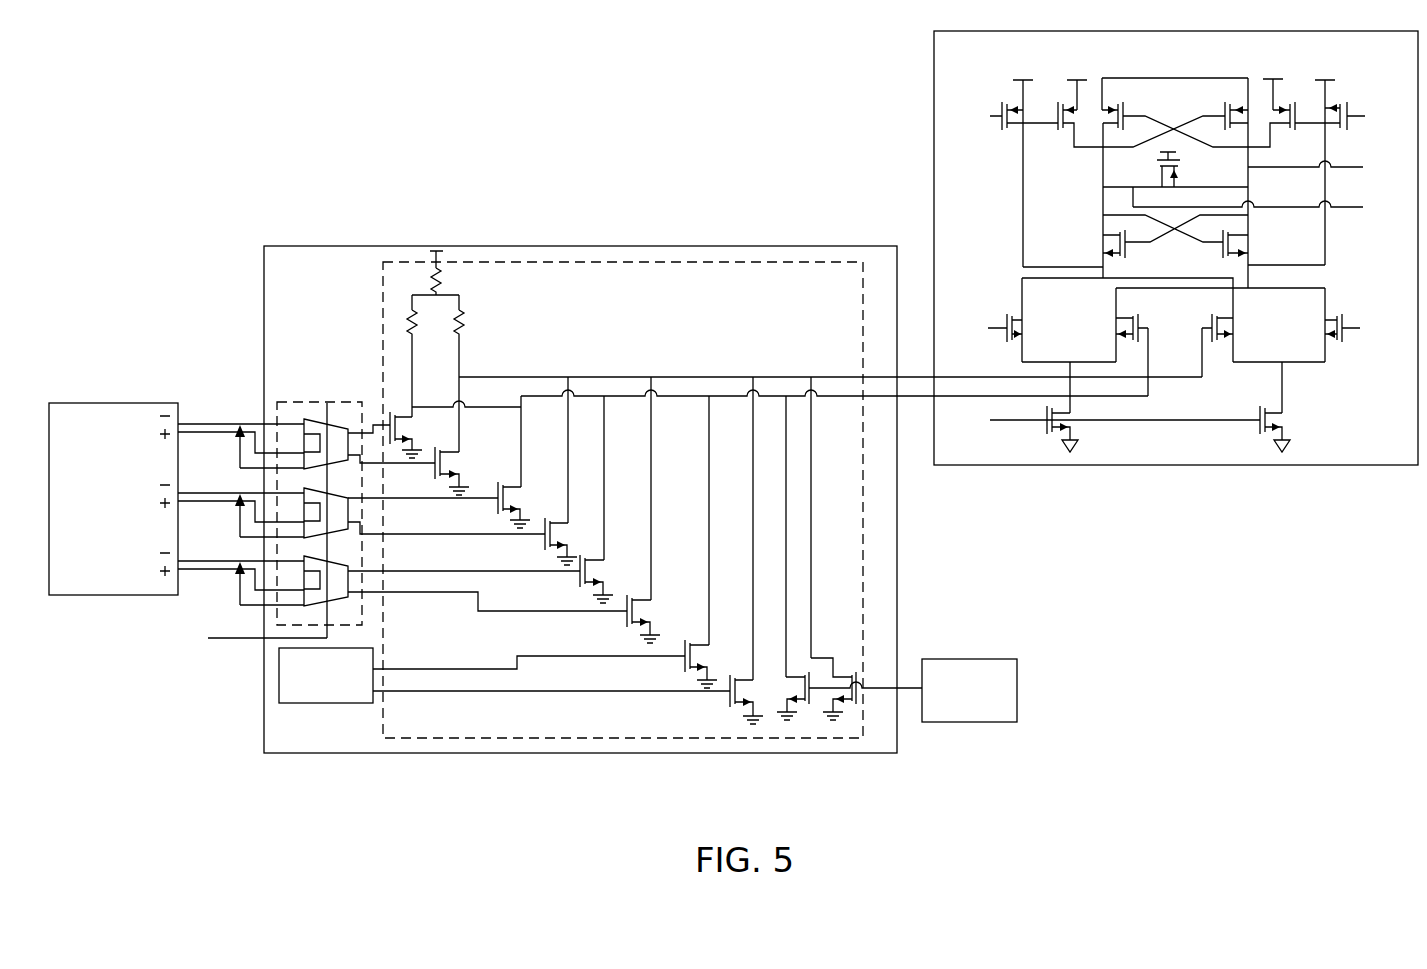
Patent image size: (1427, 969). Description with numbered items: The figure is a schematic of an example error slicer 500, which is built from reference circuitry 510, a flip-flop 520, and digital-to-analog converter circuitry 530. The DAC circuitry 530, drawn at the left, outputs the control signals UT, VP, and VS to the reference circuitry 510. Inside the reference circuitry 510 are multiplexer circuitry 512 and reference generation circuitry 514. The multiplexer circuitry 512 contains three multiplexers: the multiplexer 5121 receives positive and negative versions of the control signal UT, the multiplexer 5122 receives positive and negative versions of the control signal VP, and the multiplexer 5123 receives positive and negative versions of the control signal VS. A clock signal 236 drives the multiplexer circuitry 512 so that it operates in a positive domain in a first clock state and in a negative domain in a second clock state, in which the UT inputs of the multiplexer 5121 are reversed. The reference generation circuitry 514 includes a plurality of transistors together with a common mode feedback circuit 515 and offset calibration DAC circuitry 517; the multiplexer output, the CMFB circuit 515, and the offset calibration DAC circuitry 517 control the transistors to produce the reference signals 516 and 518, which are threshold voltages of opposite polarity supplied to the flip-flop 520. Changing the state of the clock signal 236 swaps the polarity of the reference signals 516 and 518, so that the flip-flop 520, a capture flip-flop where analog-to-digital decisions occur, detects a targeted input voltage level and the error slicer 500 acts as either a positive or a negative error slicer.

The error slicer 500 is at (293, 106).
The reference circuitry 510 is at (660, 246).
The multiplexer circuitry 512 is at (285, 403).
The multiplexer 5121 is at (337, 437).
The multiplexer 5122 is at (340, 524).
The multiplexer 5123 is at (338, 593).
The reference generation circuitry 514 is at (863, 597).
The common mode feedback (CMFB) circuit 515 is at (991, 703).
The reference signal 516 is at (832, 377).
The offset calibration DAC circuitry 517 is at (347, 689).
The reference signal 518 is at (837, 400).
The flip-flop 520 is at (934, 97).
The digital-to-analog converter (DAC) circuitry 530 is at (134, 504).
The clock signal 236 is at (245, 527).